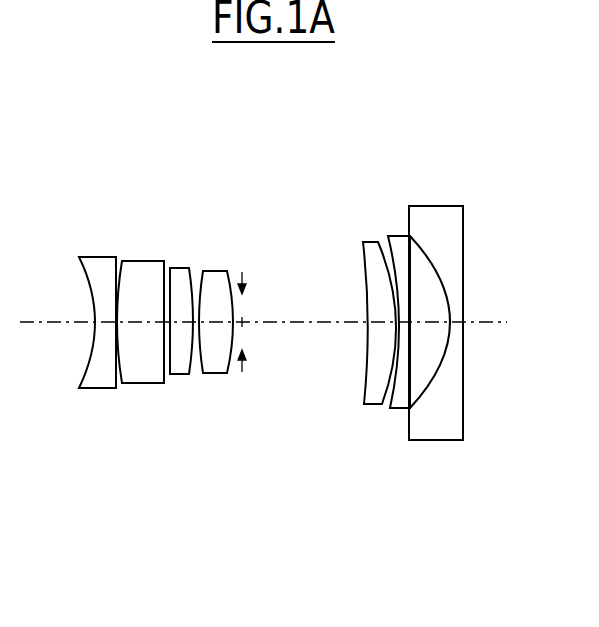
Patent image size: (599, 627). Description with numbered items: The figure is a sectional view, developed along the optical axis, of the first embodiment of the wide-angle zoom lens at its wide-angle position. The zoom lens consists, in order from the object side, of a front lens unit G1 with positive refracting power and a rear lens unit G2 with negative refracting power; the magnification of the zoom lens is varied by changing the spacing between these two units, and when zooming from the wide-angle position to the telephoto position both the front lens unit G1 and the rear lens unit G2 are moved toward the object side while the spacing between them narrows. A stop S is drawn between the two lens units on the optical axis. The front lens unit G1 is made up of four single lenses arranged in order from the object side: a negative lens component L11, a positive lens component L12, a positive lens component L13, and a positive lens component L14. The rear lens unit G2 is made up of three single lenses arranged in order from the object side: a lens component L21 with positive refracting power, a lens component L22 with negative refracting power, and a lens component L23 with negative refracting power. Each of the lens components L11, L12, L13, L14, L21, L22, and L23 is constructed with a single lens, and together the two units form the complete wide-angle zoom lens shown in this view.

The front lens unit G1 is at (232, 235).
The rear lens unit G2 is at (467, 190).
The stop S is at (244, 276).
The negative lens component L11 is at (100, 379).
The positive lens component L12 is at (142, 370).
The positive lens component L13 is at (178, 368).
The positive lens component L14 is at (215, 363).
The lens component with positive refracting power L21 is at (370, 396).
The lens component with negative refracting power L22 is at (398, 400).
The lens component with negative refracting power L23 is at (432, 432).